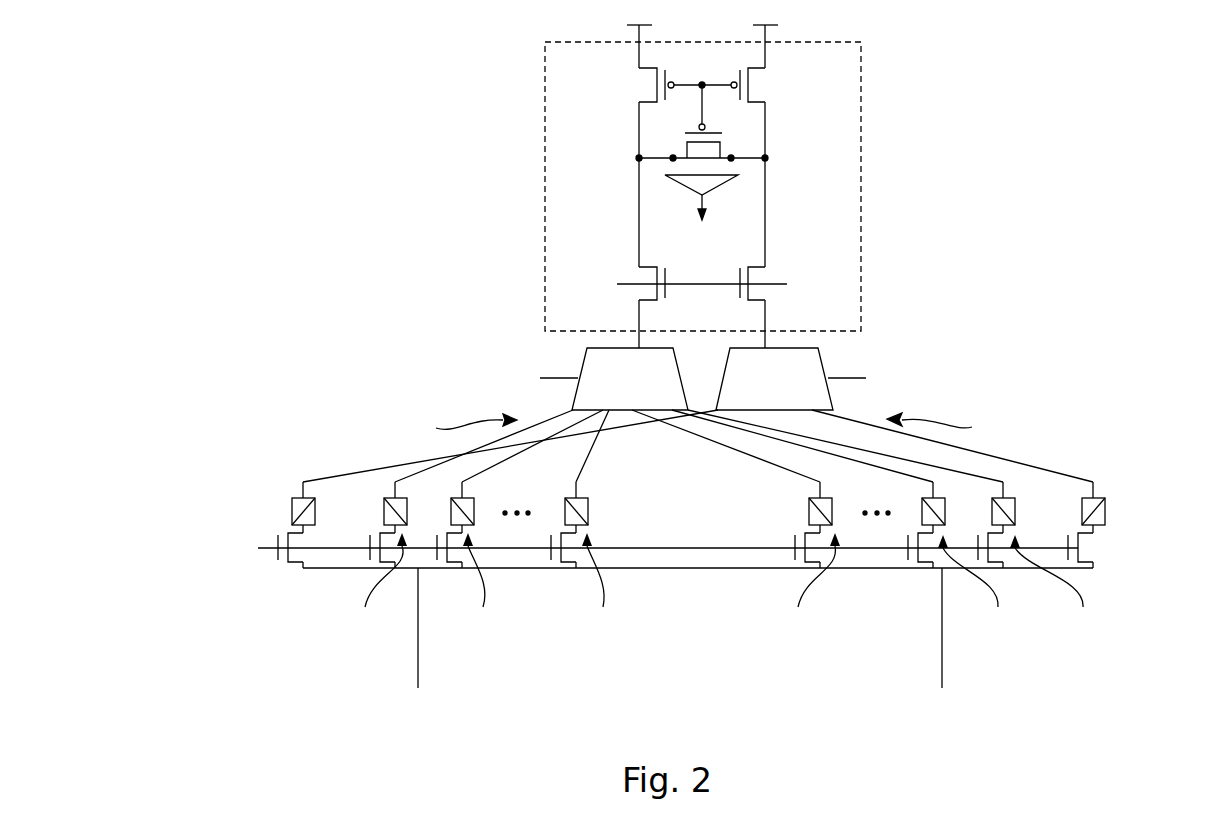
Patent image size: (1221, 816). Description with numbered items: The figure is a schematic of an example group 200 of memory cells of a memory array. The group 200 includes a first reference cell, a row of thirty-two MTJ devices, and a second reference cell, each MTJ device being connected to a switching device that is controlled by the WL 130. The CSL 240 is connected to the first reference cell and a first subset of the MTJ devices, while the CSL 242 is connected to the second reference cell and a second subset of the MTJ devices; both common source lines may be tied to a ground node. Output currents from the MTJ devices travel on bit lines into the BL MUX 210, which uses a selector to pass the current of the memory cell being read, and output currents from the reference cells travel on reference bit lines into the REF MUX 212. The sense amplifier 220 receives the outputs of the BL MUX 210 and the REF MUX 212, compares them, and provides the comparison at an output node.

The group of memory cells 200 is at (357, 66).
The sense amplifier 220 is at (861, 152).
The BL MUX 210 is at (558, 379).
The REF MUX 212 is at (849, 379).
The WL 130 is at (621, 547).
The CSL 240 is at (418, 643).
The CSL 242 is at (942, 643).